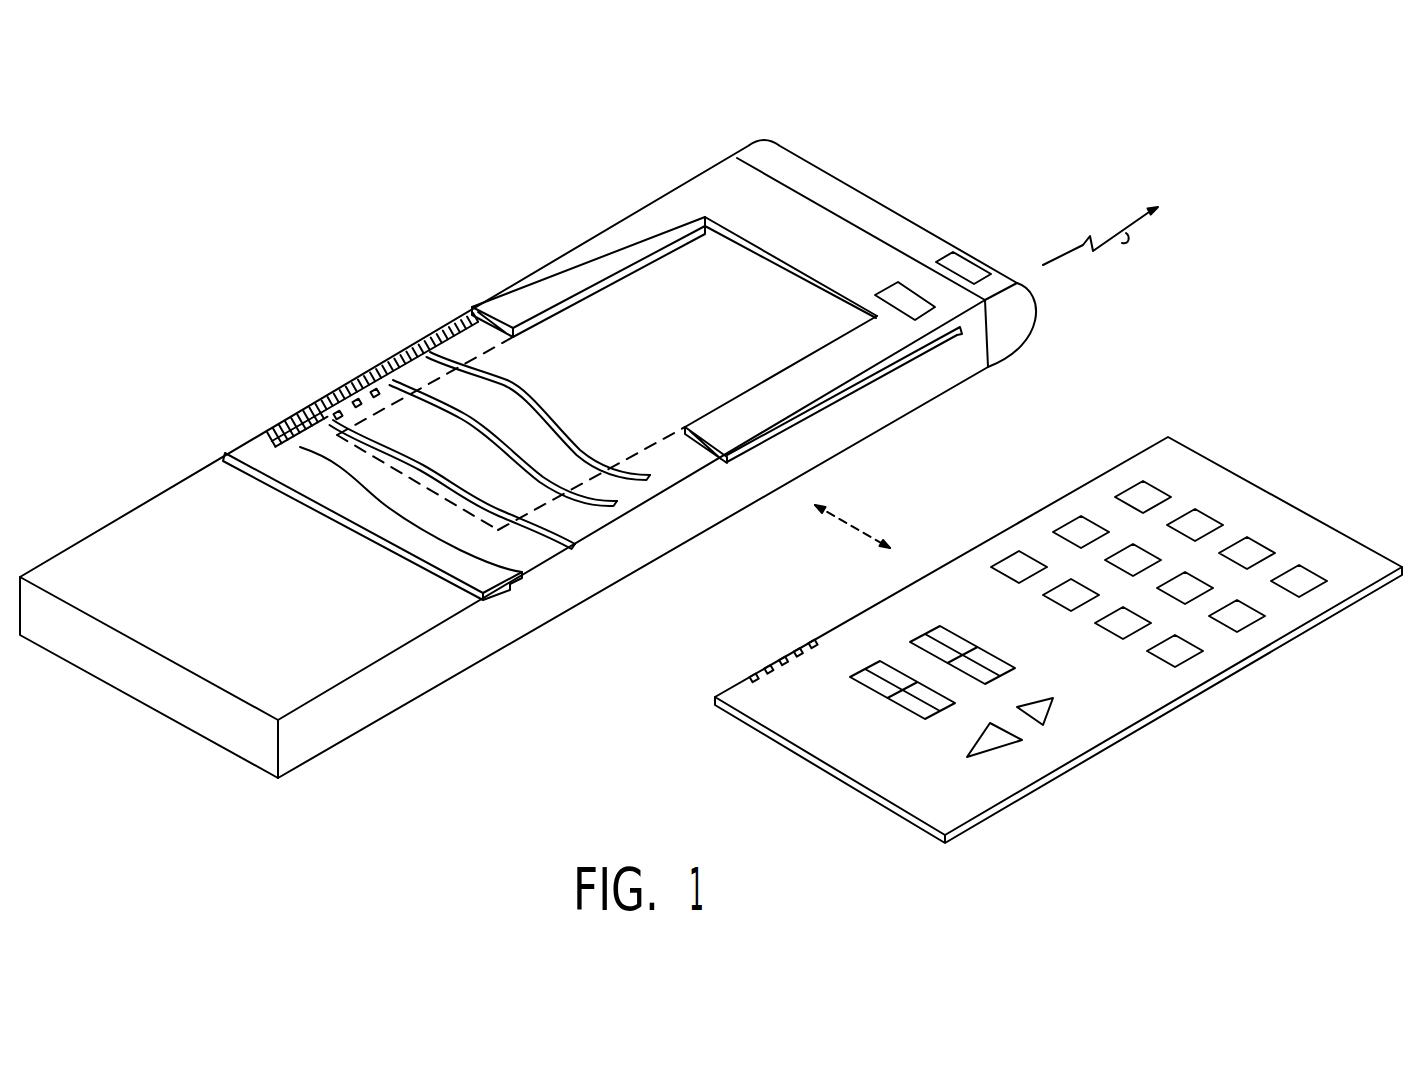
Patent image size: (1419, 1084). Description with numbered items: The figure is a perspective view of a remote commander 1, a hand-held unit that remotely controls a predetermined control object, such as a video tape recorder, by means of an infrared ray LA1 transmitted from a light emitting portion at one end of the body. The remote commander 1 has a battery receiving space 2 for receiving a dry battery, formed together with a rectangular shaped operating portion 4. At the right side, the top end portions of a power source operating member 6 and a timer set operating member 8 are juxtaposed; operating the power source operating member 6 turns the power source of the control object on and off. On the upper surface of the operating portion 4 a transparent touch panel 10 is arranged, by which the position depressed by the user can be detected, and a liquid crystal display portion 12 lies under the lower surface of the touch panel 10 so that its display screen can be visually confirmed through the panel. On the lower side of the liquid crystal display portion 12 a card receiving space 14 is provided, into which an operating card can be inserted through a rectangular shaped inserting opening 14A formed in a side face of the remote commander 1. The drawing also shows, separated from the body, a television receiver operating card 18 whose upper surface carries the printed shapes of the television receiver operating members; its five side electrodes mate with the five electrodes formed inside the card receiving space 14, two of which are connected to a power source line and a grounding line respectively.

The remote commander 1 is at (524, 731).
The battery receiving space 2 is at (180, 530).
The operating portion 4 is at (658, 283).
The power source operating member 6 is at (972, 268).
The timer set operating member 8 is at (920, 308).
The transparent touch panel 10 is at (663, 447).
The liquid crystal display portion 12 is at (623, 487).
The card receiving space 14 is at (513, 535).
The inserting opening 14A is at (910, 357).
The television receiver operating card 18 is at (1090, 518).
The infrared ray LA1 is at (1106, 244).